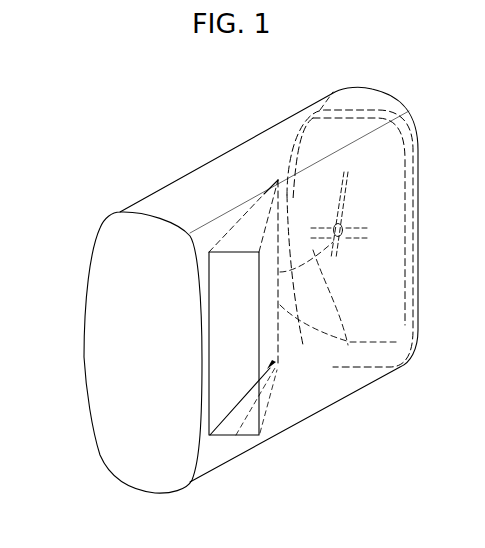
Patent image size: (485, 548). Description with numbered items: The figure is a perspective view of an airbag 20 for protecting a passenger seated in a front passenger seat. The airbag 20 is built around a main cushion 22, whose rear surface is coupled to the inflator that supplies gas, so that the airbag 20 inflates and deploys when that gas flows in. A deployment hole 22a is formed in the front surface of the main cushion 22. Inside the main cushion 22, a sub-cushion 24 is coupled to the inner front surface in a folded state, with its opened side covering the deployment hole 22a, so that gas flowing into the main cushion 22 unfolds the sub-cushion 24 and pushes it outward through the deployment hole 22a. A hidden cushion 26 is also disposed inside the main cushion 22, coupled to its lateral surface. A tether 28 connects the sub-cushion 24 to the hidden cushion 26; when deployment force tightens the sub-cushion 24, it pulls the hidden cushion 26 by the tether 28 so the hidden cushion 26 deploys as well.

The airbag 20 is at (58, 123).
The main cushion 22 is at (188, 178).
The deployment hole 22a is at (222, 361).
The sub-cushion 24 is at (281, 370).
The hidden cushion 26 is at (374, 317).
The tether 28 is at (290, 262).